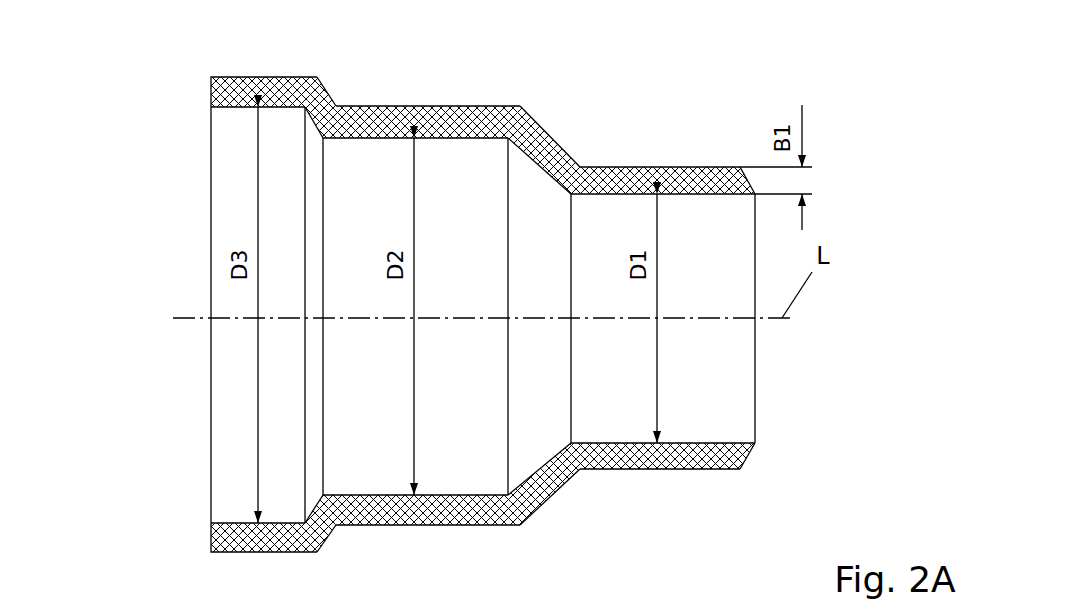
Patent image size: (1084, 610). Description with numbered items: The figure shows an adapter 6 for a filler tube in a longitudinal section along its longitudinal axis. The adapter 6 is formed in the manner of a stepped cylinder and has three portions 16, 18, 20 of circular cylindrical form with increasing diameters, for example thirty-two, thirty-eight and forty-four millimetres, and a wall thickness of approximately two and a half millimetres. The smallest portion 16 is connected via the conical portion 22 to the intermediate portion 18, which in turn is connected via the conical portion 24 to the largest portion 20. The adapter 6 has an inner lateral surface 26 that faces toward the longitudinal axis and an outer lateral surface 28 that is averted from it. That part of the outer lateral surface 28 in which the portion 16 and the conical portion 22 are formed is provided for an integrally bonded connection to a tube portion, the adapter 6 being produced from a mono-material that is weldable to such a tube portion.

The adapter 6 is at (130, 60).
The portion 20 is at (243, 78).
The conical portion 24 is at (337, 97).
The portion 18 is at (457, 106).
The conical portion 22 is at (557, 140).
The portion 16 is at (692, 331).
The inner lateral surface 26 is at (727, 443).
The outer lateral surface 28 is at (670, 470).